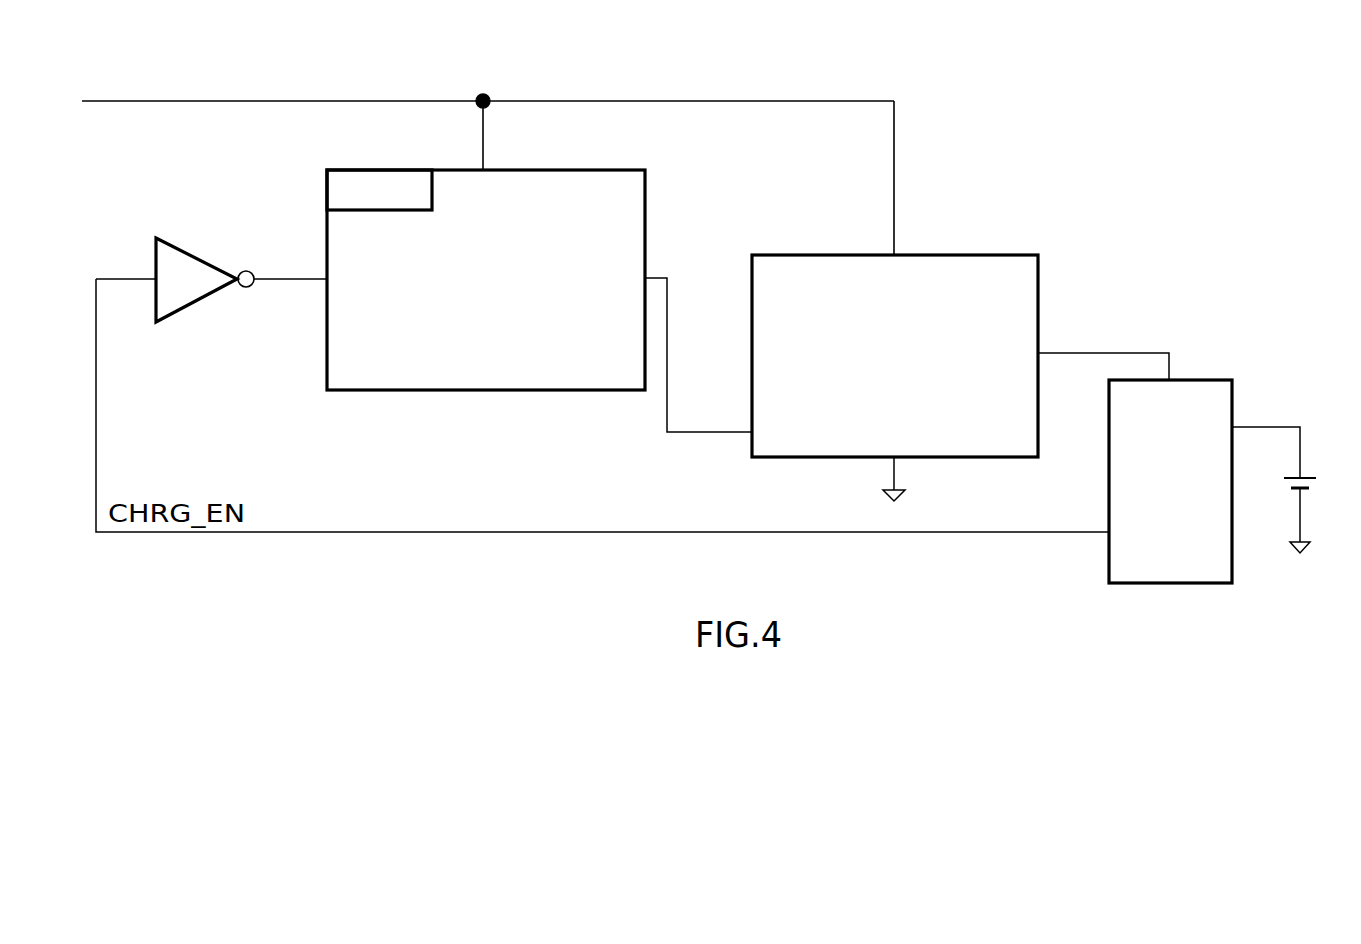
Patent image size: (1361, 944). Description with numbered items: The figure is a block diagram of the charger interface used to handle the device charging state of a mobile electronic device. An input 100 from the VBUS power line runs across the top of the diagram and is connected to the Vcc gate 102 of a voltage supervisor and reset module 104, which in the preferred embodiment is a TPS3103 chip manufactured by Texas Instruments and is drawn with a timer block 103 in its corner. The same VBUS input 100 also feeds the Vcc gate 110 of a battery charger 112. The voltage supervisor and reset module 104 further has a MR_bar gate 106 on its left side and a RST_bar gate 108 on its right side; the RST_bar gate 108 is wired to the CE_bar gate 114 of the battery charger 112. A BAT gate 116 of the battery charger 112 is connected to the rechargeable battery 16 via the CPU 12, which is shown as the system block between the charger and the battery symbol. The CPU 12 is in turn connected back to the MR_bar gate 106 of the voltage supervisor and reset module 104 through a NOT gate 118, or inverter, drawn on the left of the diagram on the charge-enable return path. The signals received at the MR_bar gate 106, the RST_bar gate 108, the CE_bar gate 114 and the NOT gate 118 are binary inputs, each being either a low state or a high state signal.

The input 100 is at (228, 101).
The Vcc gate 102 is at (498, 170).
The timer 103 is at (327, 191).
The voltage supervisor and reset module 104 is at (572, 219).
The MR_bar gate 106 is at (327, 290).
The RST_bar gate 108 is at (623, 343).
The Vcc gate 110 is at (905, 255).
The battery charger 112 is at (808, 309).
The CE_bar gate 114 is at (780, 448).
The BAT gate 116 is at (1012, 333).
The NOT gate 118 is at (180, 293).
The CPU 12 is at (1178, 556).
The rechargeable battery 16 is at (1320, 480).